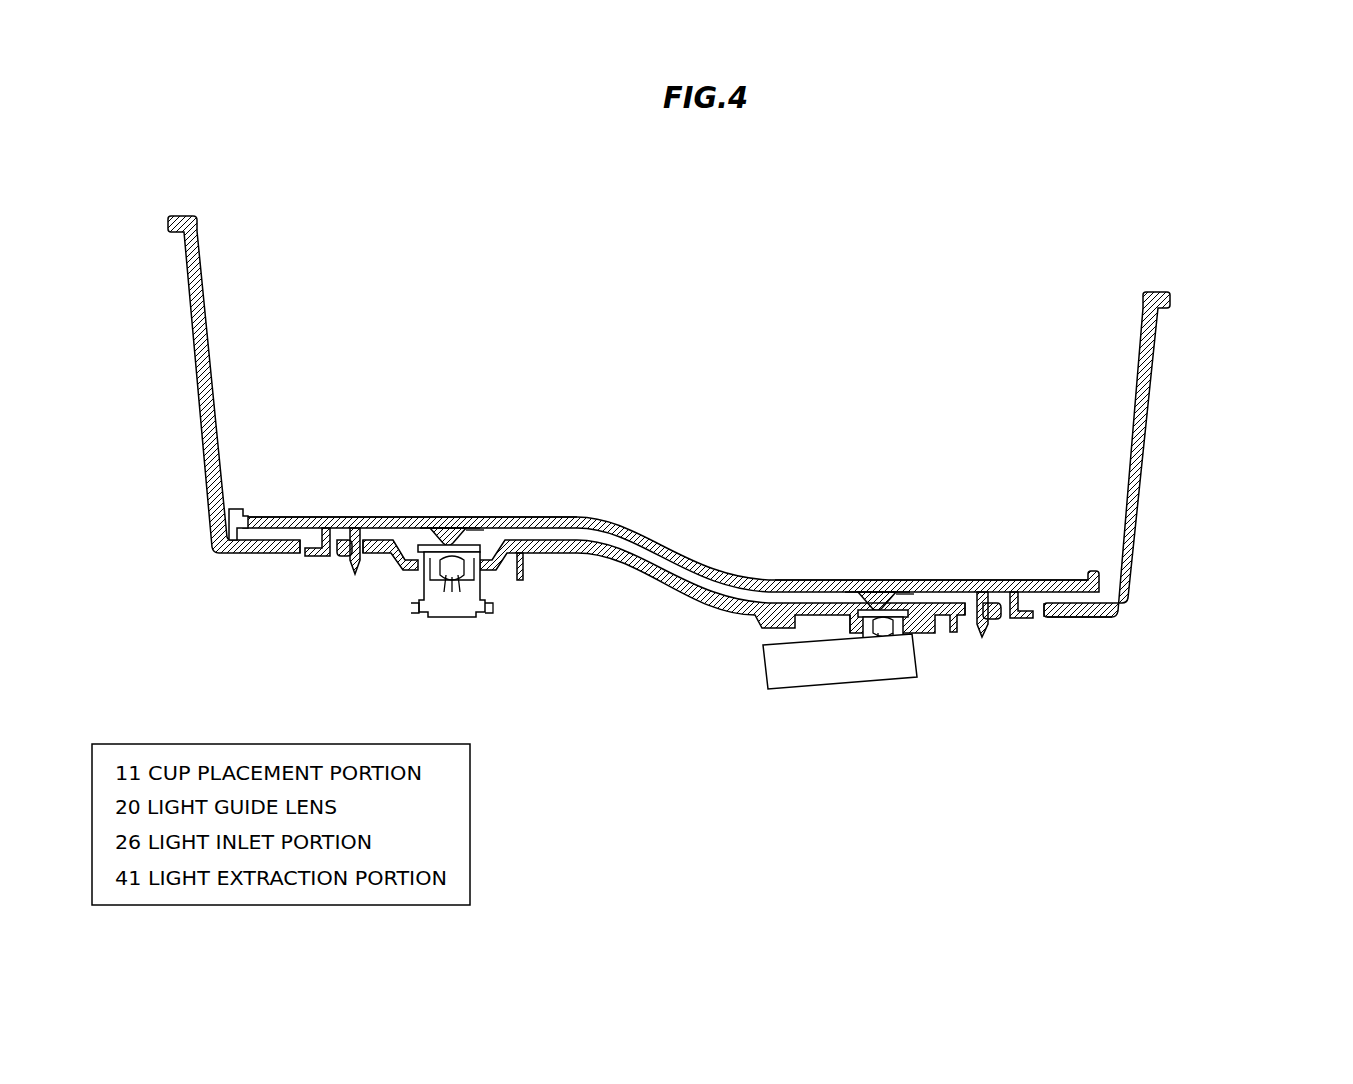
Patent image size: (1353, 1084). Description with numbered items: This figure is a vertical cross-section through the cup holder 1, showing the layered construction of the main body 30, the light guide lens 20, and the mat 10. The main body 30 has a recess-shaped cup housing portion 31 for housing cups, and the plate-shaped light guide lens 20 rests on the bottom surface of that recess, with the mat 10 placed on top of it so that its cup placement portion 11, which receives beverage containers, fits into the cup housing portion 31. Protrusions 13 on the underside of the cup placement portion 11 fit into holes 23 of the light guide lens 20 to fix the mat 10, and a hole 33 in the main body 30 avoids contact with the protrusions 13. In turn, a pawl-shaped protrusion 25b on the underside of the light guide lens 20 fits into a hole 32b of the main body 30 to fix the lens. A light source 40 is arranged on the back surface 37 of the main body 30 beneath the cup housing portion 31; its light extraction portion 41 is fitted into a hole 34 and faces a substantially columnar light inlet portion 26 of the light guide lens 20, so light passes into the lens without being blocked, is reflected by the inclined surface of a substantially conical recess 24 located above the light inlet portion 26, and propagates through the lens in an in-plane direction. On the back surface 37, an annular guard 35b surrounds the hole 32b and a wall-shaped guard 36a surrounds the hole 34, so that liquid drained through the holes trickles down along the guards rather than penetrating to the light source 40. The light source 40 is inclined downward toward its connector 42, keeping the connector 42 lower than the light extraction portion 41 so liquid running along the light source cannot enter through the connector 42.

The cup holder 1 is at (1030, 195).
The mat 10 is at (645, 533).
The cup placement portion 11 is at (396, 520).
The protrusion 13 is at (318, 557).
The light guide lens 20 is at (238, 505).
The hole 23 is at (298, 545).
The conical recess 24 is at (456, 522).
The protrusion 25b is at (355, 576).
The light inlet portion 26 is at (434, 524).
The main body 30 is at (1162, 288).
The cup housing portion 31 is at (558, 210).
The hole 32b is at (363, 538).
The hole 33 is at (298, 557).
The hole 34 is at (852, 610).
The guard 35b is at (368, 556).
The guard 36a is at (523, 578).
The back surface 37 is at (1068, 618).
The light source 40 is at (457, 620).
The light extraction portion 41 is at (482, 524).
The connector 42 is at (770, 679).